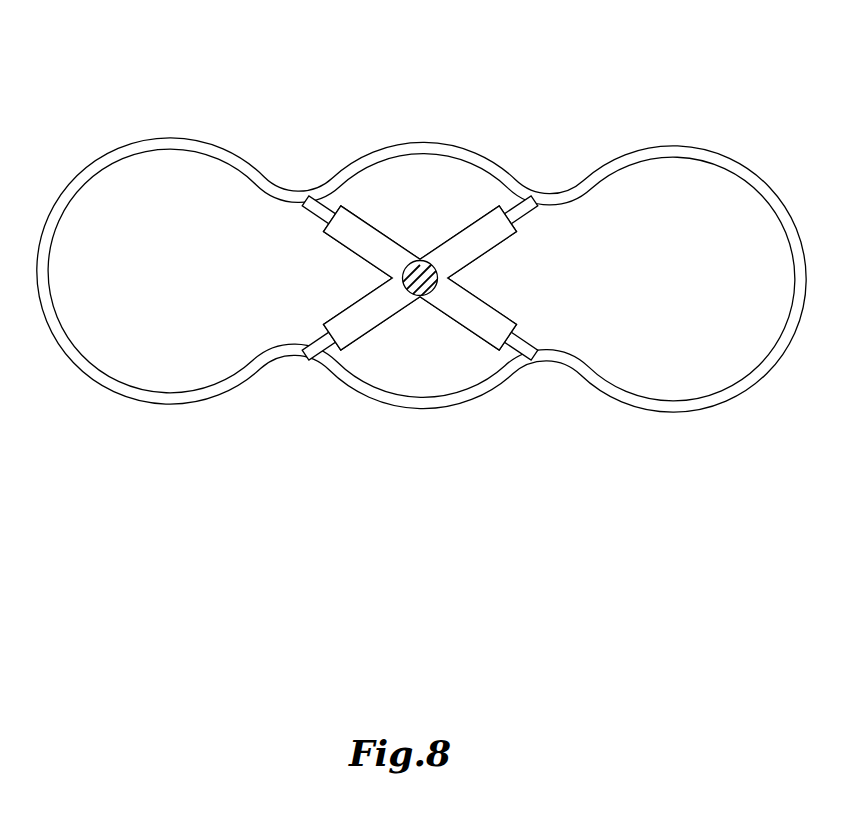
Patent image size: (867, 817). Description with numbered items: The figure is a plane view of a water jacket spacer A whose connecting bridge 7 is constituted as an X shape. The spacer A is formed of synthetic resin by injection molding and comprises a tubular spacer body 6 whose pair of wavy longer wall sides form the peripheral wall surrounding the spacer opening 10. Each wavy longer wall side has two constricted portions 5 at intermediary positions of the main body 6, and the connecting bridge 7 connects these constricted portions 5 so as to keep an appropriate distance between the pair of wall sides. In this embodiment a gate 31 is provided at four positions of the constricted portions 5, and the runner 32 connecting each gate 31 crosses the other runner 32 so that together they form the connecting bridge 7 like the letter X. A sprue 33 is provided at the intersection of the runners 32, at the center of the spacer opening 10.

The tubular spacer body 6 is at (98, 163).
The constricted portion 5 is at (297, 189).
The gate 31 is at (311, 220).
The runner 32 is at (358, 218).
The connecting bridge 7 is at (420, 291).
The sprue 33 is at (424, 259).
The spacer opening 10 is at (651, 182).
The spacer A is at (736, 150).